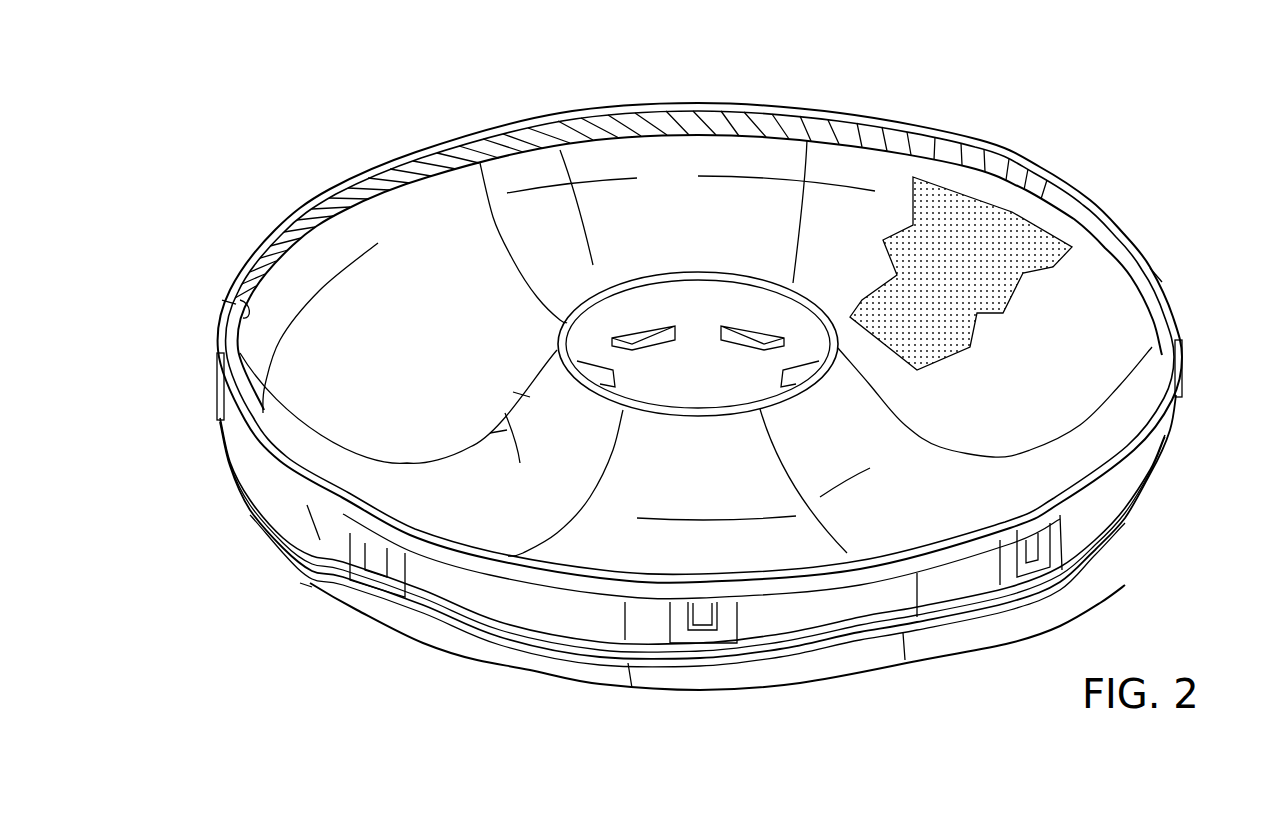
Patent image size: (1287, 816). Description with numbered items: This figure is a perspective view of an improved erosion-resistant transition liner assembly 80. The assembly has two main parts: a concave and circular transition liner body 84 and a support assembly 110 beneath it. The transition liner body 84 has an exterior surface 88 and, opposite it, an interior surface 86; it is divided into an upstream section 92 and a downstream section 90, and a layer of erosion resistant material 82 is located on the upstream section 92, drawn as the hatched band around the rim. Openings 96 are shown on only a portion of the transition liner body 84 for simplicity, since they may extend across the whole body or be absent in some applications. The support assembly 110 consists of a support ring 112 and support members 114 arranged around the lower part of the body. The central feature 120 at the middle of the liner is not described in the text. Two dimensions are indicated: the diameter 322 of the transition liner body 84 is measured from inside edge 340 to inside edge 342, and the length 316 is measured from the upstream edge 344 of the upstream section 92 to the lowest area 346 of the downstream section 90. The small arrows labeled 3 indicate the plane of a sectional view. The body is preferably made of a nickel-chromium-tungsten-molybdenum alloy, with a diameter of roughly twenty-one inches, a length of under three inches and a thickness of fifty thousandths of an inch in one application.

The erosion-resistant transition liner assembly 80 is at (1197, 180).
The layer of erosion resistant material 82 is at (818, 130).
The transition liner body 84 is at (1095, 360).
The interior surface 86 is at (387, 213).
The exterior surface 88 is at (463, 647).
The downstream section 90 is at (563, 157).
The upstream section 92 is at (637, 145).
The openings 96 is at (988, 243).
The support assembly 110 is at (1173, 470).
The support ring 112 is at (807, 655).
The support members 114 is at (693, 633).
The central hub 120 is at (645, 325).
The length 316 is at (310, 582).
The diameter 322 is at (213, 160).
The inside edge 340 is at (248, 313).
The inside edge 342 is at (1152, 274).
The upstream edge 344 is at (228, 298).
The lowest area 346 is at (308, 585).
The section line FIG. 3 is at (207, 393).